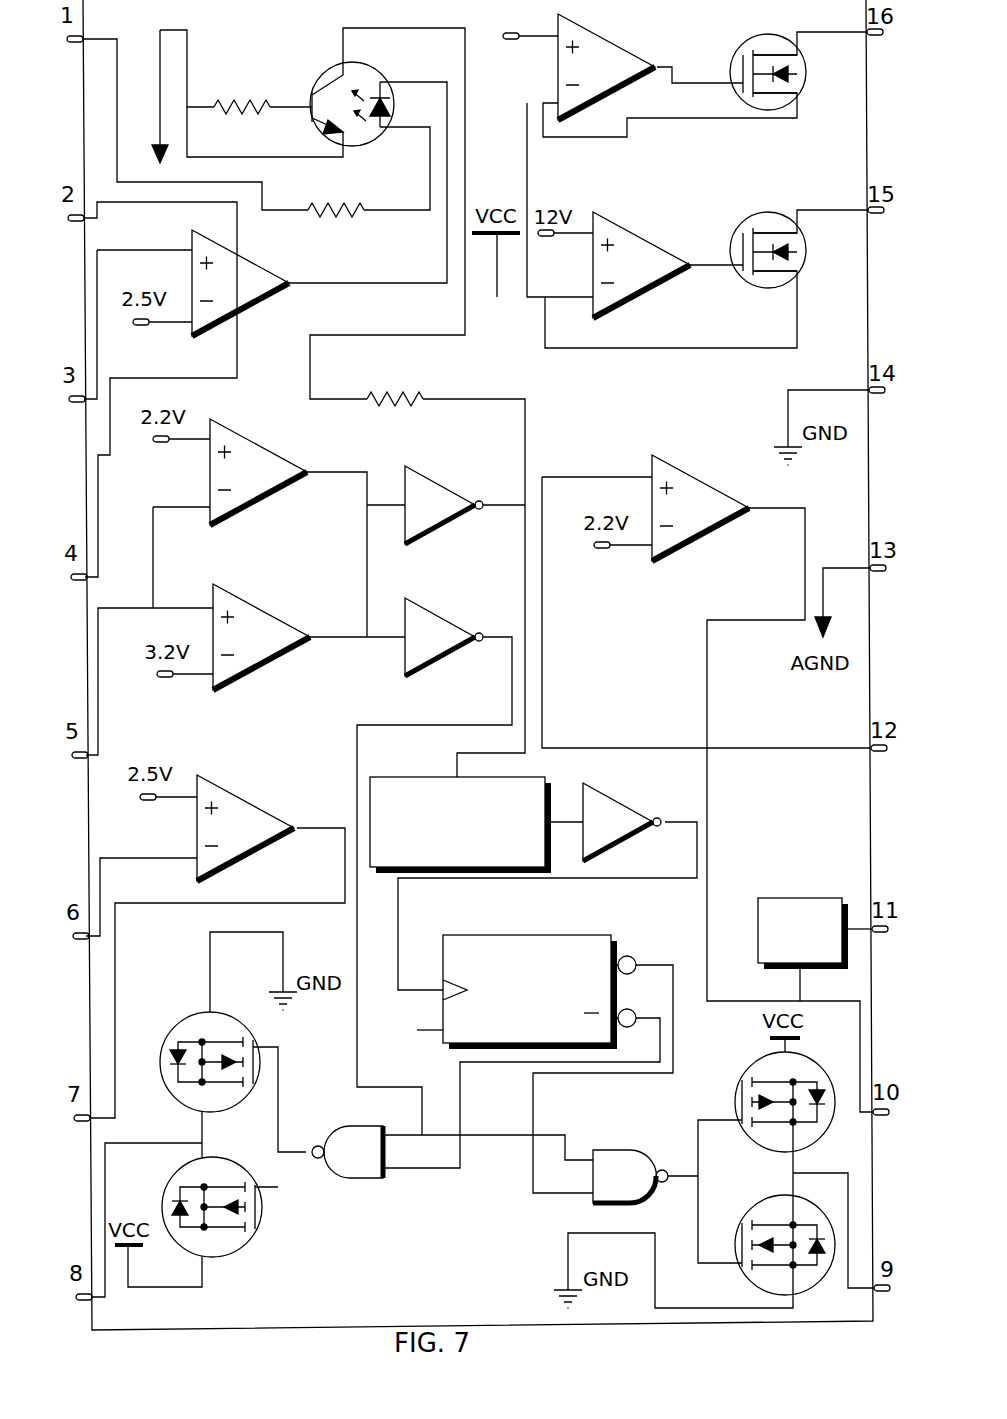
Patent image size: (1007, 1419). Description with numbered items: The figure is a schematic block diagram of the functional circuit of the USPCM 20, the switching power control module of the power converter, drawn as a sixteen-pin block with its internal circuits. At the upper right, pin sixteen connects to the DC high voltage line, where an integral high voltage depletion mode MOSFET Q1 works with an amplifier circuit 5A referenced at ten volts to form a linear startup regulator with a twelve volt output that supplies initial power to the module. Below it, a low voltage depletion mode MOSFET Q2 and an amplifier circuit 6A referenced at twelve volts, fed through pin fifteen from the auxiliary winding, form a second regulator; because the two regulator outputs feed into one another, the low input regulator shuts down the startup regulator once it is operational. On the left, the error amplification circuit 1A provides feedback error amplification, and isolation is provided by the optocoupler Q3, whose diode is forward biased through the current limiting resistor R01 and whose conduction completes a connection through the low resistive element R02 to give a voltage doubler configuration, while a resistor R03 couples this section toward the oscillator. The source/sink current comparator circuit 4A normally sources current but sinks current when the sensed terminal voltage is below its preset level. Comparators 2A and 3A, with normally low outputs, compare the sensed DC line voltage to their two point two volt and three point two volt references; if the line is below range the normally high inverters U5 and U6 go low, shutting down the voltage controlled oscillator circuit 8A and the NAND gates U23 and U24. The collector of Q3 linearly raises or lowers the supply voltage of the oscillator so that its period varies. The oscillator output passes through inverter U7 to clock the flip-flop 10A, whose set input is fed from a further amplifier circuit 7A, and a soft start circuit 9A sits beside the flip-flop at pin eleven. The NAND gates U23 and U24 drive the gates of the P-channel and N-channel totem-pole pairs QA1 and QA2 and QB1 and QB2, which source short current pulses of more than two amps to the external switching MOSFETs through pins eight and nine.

The USPCM 20 is at (57, 639).
The error amplification circuit 1A is at (240, 283).
The comparator 2A is at (258, 472).
The comparator 3A is at (261, 637).
The source/sink current comparator circuit 4A is at (245, 828).
The amplifier circuit 5A is at (606, 67).
The amplifier circuit 6A is at (641, 265).
The amplifier circuit 7A is at (700, 508).
The voltage controlled oscillator circuit 8A is at (459, 809).
The soft start circuit 9A is at (796, 935).
The flip-flop 10A is at (539, 975).
The high voltage depletion mode MOSFET Q1 is at (768, 58).
The low voltage depletion mode MOSFET Q2 is at (768, 236).
The optocoupler Q3 is at (338, 107).
The current limiting resistor R01 is at (242, 91).
The low resistive element R02 is at (336, 195).
The resistor R03 is at (395, 385).
The inverter U5 is at (438, 493).
The inverter U6 is at (438, 625).
The inverter U7 is at (618, 814).
The NAND gate U23 is at (342, 1171).
The NAND gate U24 is at (621, 1164).
The totem-pole MOSFET QA1 is at (216, 1217).
The totem-pole MOSFET QA2 is at (215, 1073).
The totem-pole MOSFET QB1 is at (764, 1095).
The totem-pole MOSFET QB2 is at (764, 1239).